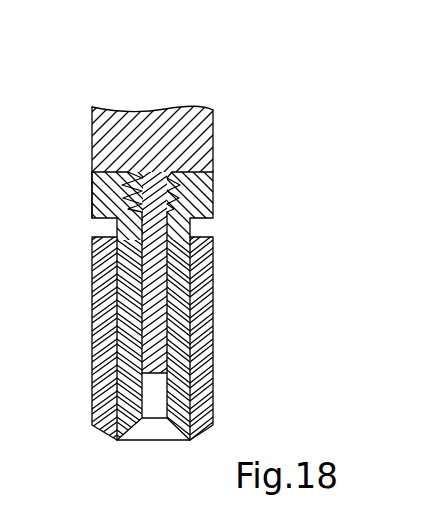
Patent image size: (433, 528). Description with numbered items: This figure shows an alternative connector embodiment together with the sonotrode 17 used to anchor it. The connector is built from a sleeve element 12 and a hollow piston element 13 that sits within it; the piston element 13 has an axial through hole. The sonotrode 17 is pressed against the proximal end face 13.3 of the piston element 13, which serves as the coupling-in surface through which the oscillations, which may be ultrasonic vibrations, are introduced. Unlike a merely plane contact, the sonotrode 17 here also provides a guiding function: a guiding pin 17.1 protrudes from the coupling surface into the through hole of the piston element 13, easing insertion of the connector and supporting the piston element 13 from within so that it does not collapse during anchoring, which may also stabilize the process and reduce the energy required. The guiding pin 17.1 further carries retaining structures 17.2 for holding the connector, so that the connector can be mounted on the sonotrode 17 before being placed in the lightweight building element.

The sleeve element 12 is at (198, 273).
The piston element 13 is at (213, 188).
The proximal end face 13.3 is at (125, 170).
The sonotrode 17 is at (213, 148).
The guiding pin 17.1 is at (177, 318).
The retaining structures 17.2 is at (118, 189).